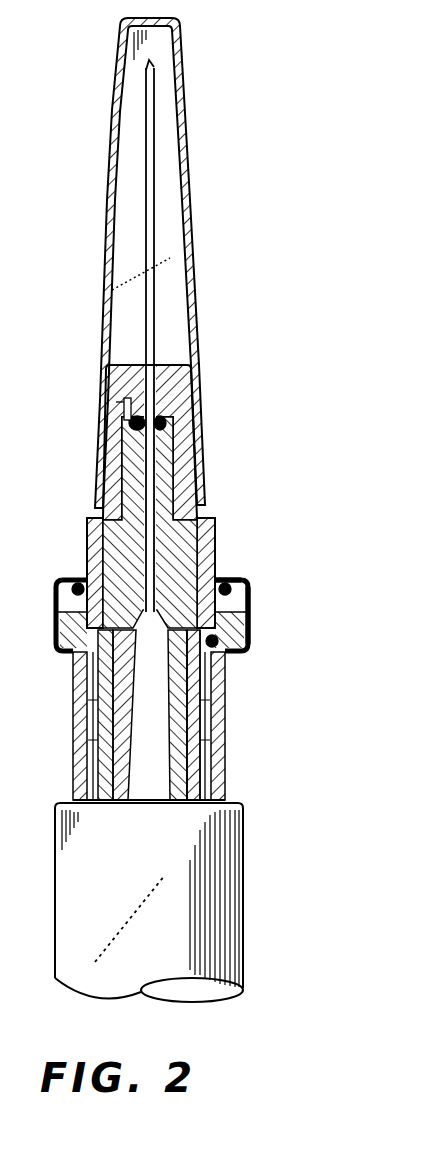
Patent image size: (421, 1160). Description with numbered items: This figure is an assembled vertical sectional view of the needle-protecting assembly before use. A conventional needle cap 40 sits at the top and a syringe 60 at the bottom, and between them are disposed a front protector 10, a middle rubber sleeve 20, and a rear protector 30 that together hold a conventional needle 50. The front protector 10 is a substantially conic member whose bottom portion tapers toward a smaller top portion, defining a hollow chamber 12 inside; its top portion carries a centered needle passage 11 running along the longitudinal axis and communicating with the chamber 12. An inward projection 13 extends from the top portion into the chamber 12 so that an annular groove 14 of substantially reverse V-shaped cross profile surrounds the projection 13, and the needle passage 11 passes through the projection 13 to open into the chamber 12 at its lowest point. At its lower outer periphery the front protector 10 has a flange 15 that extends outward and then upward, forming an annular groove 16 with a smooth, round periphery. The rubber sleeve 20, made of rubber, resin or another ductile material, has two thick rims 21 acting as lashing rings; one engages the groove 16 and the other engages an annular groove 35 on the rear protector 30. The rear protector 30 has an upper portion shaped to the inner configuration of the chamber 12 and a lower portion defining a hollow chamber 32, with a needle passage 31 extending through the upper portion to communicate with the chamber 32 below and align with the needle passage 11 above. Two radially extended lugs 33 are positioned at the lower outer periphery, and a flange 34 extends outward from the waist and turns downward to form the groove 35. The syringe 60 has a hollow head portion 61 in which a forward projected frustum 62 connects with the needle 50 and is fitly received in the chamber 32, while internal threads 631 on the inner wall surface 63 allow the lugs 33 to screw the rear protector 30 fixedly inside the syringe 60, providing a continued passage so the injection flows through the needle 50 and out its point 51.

The front protector 10 is at (217, 540).
The needle passage 11 is at (192, 375).
The hollow chamber 12 is at (163, 420).
The inward projection 13 is at (112, 425).
The annular groove 14 is at (118, 405).
The flange 15 is at (250, 594).
The annular groove 16 is at (250, 578).
The middle rubber sleeve 20 is at (252, 615).
The rims 21 is at (80, 582).
The rear protector 30 is at (214, 563).
The needle passage 31 is at (148, 498).
The hollow chamber 32 is at (226, 720).
The lugs 33 is at (226, 772).
The flange 34 is at (254, 624).
The annular groove 35 is at (236, 652).
The needle cap 40 is at (185, 192).
The needle 50 is at (155, 307).
The point 51 is at (155, 63).
The syringe 60 is at (243, 863).
The head portion 61 is at (84, 762).
The frustum 62 is at (227, 698).
The inner wall surface 63 is at (222, 738).
The internal threads 631 is at (212, 757).